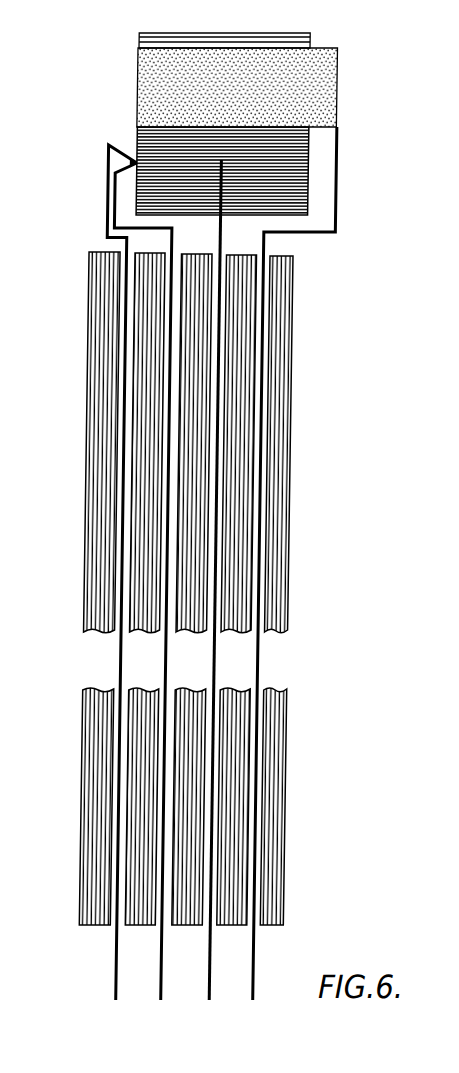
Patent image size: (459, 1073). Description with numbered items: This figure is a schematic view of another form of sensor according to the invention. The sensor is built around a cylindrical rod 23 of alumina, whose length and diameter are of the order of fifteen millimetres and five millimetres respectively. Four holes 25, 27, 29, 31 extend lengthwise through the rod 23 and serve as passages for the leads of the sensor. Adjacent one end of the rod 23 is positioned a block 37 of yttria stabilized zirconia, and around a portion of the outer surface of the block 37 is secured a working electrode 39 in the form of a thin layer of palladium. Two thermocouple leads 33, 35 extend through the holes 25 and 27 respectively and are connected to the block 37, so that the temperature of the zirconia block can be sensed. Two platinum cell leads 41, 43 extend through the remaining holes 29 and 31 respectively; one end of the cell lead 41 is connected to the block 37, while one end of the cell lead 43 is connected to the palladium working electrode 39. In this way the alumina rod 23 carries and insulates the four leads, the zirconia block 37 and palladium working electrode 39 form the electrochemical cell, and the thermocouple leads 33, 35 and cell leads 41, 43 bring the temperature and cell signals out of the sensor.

The cylindrical rod 23 is at (159, 588).
The hole 25 is at (120, 634).
The hole 27 is at (166, 634).
The hole 29 is at (214, 634).
The hole 31 is at (260, 633).
The thermocouple lead 33 is at (125, 988).
The thermocouple lead 35 is at (170, 988).
The block 37 is at (140, 138).
The working electrode 39 is at (324, 70).
The platinum cell lead 41 is at (218, 988).
The platinum cell lead 43 is at (262, 988).